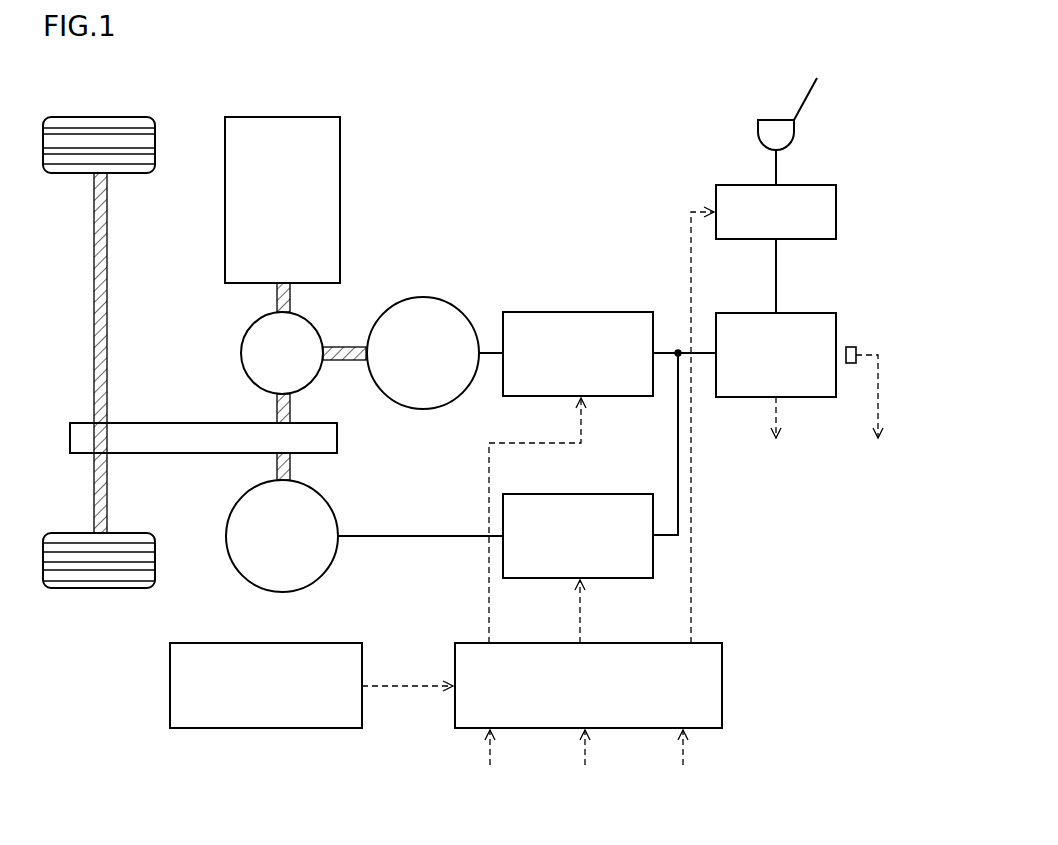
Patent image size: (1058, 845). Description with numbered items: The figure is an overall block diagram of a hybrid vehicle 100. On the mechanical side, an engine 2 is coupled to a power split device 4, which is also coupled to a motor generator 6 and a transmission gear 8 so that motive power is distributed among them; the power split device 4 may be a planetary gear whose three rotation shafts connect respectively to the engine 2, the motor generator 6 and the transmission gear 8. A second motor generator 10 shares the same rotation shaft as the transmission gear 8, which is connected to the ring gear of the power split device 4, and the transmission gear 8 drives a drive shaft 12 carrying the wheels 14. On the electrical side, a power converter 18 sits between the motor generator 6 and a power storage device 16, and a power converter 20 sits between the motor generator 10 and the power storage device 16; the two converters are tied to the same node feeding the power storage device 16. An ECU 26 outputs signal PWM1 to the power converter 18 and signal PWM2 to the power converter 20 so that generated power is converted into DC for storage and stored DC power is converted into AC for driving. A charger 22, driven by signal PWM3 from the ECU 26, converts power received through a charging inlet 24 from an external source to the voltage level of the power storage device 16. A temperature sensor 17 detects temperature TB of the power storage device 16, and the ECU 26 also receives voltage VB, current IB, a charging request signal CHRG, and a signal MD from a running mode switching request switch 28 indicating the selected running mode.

The hybrid vehicle 100 is at (88, 80).
The engine 2 is at (302, 117).
The power split device 4 is at (250, 321).
The motor generator 6 is at (394, 305).
The transmission gear 8 is at (180, 423).
The motor generator 10 is at (252, 486).
The drive shaft 12 is at (94, 300).
The wheels 14 is at (118, 117).
The power storage device 16 is at (812, 313).
The temperature sensor 17 is at (855, 347).
The power converter 18 is at (600, 312).
The power converter 20 is at (600, 494).
The charger 22 is at (812, 185).
The charging inlet 24 is at (771, 118).
The ECU 26 is at (710, 643).
The running mode switching request switch 28 is at (170, 688).